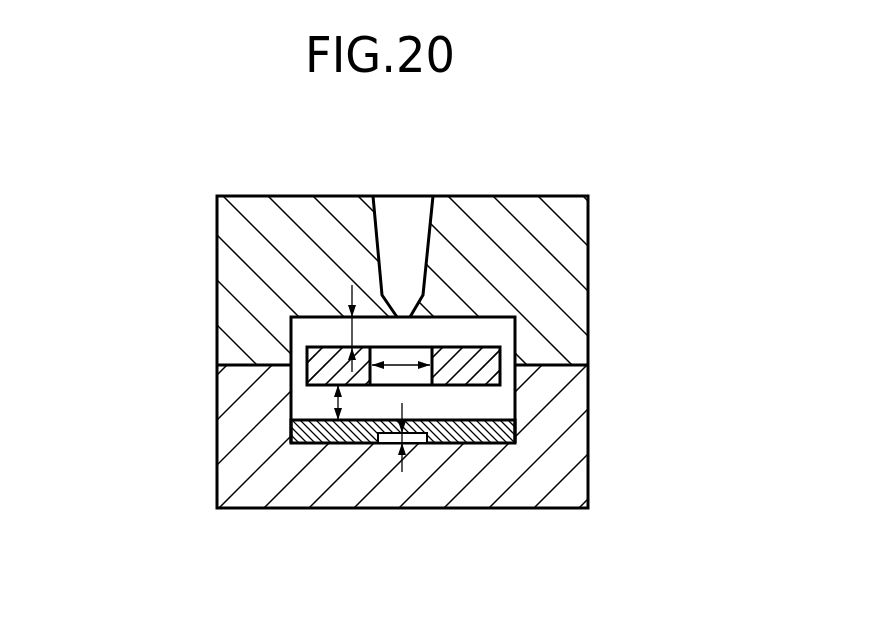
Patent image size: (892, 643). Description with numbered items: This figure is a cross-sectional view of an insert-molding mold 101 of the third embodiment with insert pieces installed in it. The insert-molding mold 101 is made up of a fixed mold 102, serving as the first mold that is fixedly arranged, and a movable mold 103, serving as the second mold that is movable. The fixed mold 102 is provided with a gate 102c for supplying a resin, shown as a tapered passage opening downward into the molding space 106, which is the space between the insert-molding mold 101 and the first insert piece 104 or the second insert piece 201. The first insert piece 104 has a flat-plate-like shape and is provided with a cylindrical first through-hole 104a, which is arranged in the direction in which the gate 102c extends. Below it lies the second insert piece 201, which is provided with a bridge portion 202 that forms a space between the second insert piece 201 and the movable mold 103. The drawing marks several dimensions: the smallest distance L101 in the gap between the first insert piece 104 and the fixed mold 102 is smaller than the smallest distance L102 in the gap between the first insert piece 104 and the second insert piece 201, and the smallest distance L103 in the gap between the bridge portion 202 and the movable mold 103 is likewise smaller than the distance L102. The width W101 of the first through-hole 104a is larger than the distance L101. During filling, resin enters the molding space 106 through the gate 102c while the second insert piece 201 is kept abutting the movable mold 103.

The insert-molding mold 101 is at (110, 262).
The fixed mold 102 is at (217, 277).
The movable mold 103 is at (217, 436).
The gate 102c is at (373, 233).
The molding space 106 is at (527, 392).
The second insert piece 201 is at (513, 432).
The bridge portion 202 is at (390, 431).
The first insert piece 104 is at (467, 373).
The first through-hole 104a is at (380, 345).
The width of the first through-hole W101 is at (402, 365).
The smallest distance in the gap between the first insert piece and the fixed mold L101 is at (317, 330).
The smallest distance in the gap between the first insert piece and the second inser L102 is at (333, 403).
The smallest distance in the gap between the bridge portion and the movable mold L103 is at (408, 438).